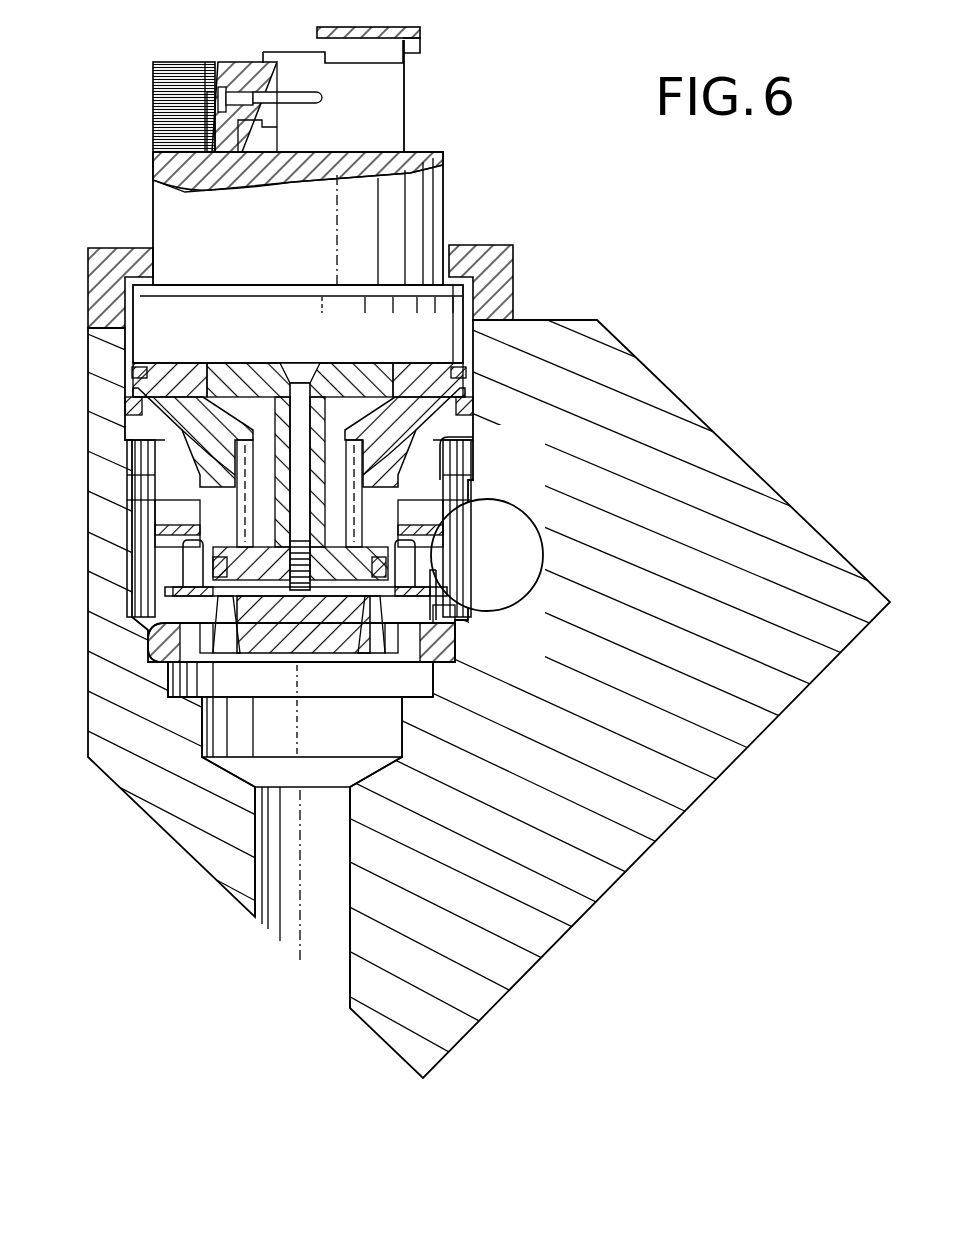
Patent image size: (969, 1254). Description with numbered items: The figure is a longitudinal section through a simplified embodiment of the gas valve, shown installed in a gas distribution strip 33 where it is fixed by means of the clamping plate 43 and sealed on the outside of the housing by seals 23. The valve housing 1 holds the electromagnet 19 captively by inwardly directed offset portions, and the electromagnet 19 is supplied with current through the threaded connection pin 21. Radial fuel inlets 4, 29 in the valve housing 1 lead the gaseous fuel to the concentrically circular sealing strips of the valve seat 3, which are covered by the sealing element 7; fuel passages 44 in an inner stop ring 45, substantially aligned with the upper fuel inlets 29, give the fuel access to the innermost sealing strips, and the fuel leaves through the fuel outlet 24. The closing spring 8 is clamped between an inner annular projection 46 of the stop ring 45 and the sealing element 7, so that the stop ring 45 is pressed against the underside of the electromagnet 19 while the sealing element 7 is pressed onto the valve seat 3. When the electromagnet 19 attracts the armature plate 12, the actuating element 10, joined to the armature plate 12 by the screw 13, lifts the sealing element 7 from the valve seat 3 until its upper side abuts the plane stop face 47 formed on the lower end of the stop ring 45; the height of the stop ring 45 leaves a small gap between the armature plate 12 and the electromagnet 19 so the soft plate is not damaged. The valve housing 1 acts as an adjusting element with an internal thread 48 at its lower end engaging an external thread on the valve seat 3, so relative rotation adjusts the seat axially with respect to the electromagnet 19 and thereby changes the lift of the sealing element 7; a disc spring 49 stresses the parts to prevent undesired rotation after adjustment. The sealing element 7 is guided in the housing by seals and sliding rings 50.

The valve body 1 is at (120, 431).
The valve seat 3 is at (300, 607).
The fuel inlets 4 is at (190, 569).
The sealing element 7 is at (426, 536).
The closing spring 8 is at (193, 437).
The actuating element 10 is at (290, 412).
The armature plate 12 is at (222, 376).
The screw 13 is at (306, 390).
The electromagnet 19 is at (430, 197).
The threaded connection pin 21 is at (297, 96).
The seals 23 is at (440, 652).
The fuel outlet 24 is at (388, 729).
The fuel inlet 29 is at (205, 503).
The gas distribution strip 33 is at (614, 364).
The clamping plate 43 is at (106, 262).
The fuel passages 44 is at (445, 477).
The inner stop ring 45 is at (415, 395).
The annular projection 46 is at (356, 412).
The stop face 47 is at (205, 531).
The internal thread 48 is at (440, 622).
The disc spring 49 is at (172, 604).
The sliding rings 50 is at (438, 571).